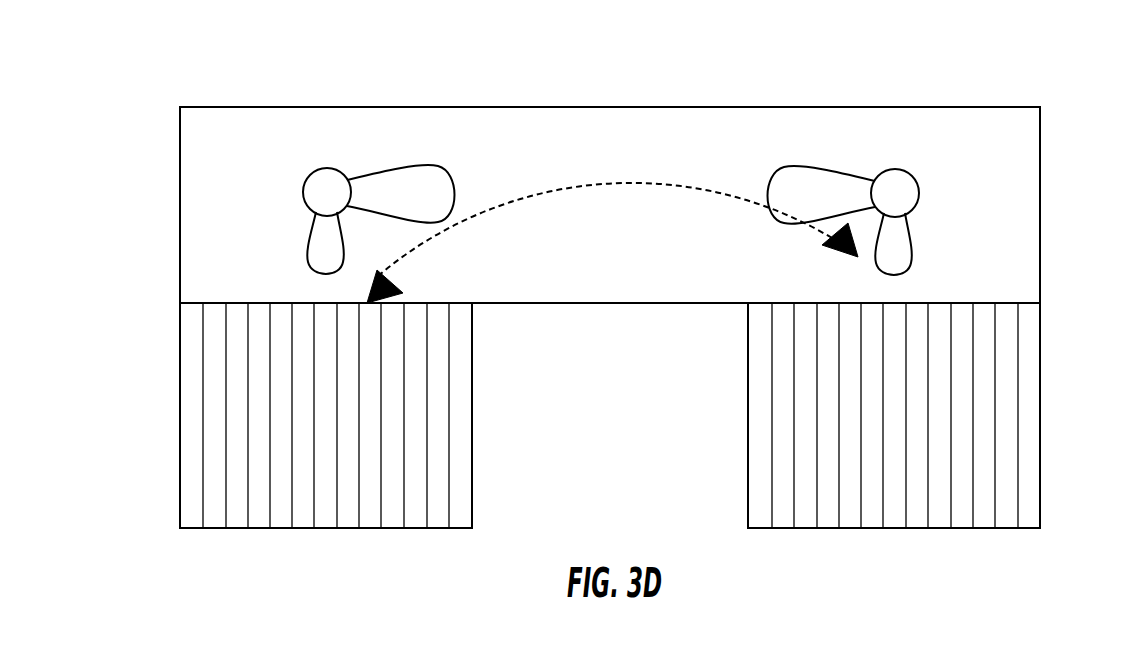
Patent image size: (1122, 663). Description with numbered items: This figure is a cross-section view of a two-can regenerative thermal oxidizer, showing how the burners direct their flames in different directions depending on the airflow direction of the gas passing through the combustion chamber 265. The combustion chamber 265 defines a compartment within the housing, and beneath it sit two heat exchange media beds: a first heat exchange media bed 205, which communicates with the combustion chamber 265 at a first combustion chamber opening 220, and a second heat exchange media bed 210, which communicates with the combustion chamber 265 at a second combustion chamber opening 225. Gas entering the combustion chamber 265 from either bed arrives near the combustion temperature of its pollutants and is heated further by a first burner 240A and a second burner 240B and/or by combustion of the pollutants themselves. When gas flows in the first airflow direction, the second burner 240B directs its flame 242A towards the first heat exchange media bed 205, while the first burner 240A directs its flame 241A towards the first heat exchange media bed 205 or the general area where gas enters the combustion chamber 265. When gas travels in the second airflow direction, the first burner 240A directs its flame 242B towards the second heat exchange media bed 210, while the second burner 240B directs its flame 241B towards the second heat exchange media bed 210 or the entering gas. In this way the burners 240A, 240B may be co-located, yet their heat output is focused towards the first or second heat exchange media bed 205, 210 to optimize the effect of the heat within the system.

The first heat exchange media bed 205 is at (258, 378).
The second heat exchange media bed 210 is at (977, 363).
The first combustion chamber opening 220 is at (237, 302).
The second combustion chamber opening 225 is at (983, 302).
The first burner 240A is at (328, 168).
The second burner 240B is at (895, 170).
The flame 241A is at (308, 238).
The flame 241B is at (415, 165).
The flame 242A is at (802, 165).
The flame 242B is at (913, 244).
The combustion chamber 265 is at (235, 192).